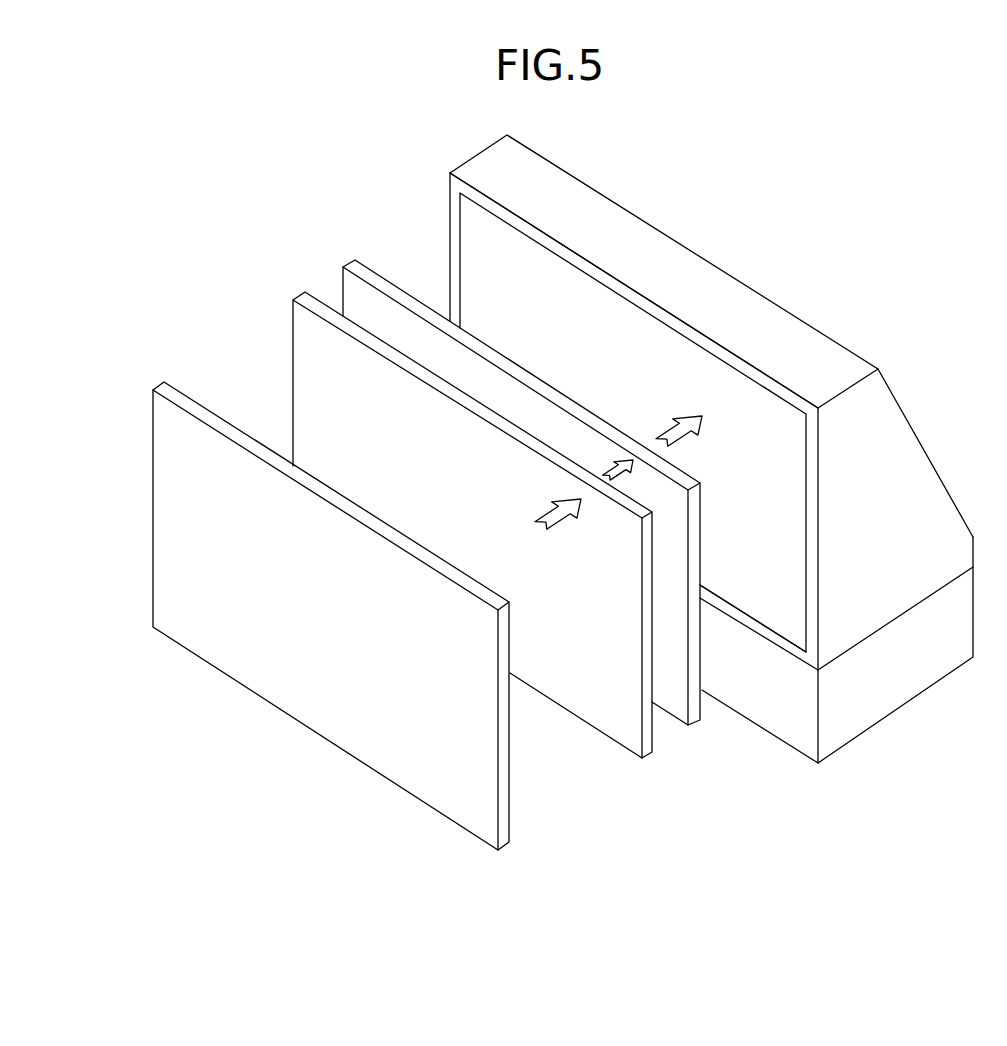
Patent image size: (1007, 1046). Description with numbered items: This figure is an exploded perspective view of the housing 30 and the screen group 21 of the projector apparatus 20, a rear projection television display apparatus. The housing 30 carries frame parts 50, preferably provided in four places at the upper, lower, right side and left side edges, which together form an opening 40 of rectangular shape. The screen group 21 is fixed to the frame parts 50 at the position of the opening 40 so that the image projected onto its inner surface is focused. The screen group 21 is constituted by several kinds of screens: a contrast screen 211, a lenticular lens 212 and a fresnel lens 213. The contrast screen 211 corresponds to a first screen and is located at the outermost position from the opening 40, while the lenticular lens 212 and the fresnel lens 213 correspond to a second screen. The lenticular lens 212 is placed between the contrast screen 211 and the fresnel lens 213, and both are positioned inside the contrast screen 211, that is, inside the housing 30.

The projector apparatus 20 is at (768, 188).
The screen group 21 is at (341, 249).
The contrast screen 211 is at (382, 745).
The lenticular lens 212 is at (610, 712).
The fresnel lens 213 is at (673, 697).
The housing 30 is at (795, 347).
The opening 40 is at (782, 503).
The frame parts 50 is at (452, 248).